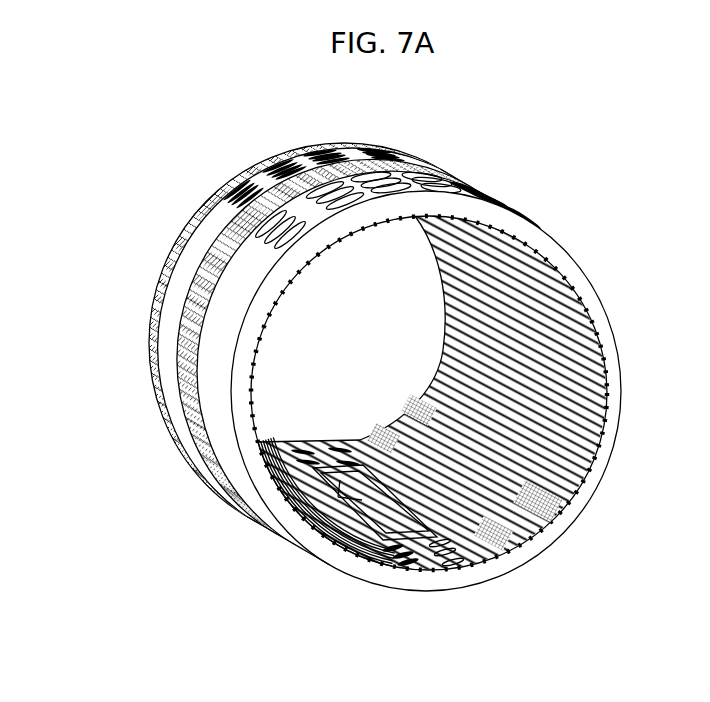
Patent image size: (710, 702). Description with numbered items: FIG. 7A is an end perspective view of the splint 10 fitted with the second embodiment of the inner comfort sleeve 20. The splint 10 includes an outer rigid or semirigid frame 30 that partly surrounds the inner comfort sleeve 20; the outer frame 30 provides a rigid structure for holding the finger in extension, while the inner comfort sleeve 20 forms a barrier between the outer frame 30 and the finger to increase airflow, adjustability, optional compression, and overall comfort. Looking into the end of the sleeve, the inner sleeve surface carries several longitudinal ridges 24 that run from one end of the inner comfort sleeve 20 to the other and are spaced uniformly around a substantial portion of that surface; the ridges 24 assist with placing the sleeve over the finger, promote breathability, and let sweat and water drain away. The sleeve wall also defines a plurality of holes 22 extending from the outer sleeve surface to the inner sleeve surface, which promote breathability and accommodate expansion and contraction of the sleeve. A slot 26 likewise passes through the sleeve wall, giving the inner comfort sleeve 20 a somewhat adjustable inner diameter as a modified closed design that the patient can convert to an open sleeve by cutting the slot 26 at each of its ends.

The splint 10 is at (388, 367).
The inner comfort sleeve 20 is at (377, 367).
The holes 22 is at (436, 180).
The longitudinal ridges 24 is at (440, 355).
The slot 26 is at (361, 500).
The outer frame 30 is at (205, 462).